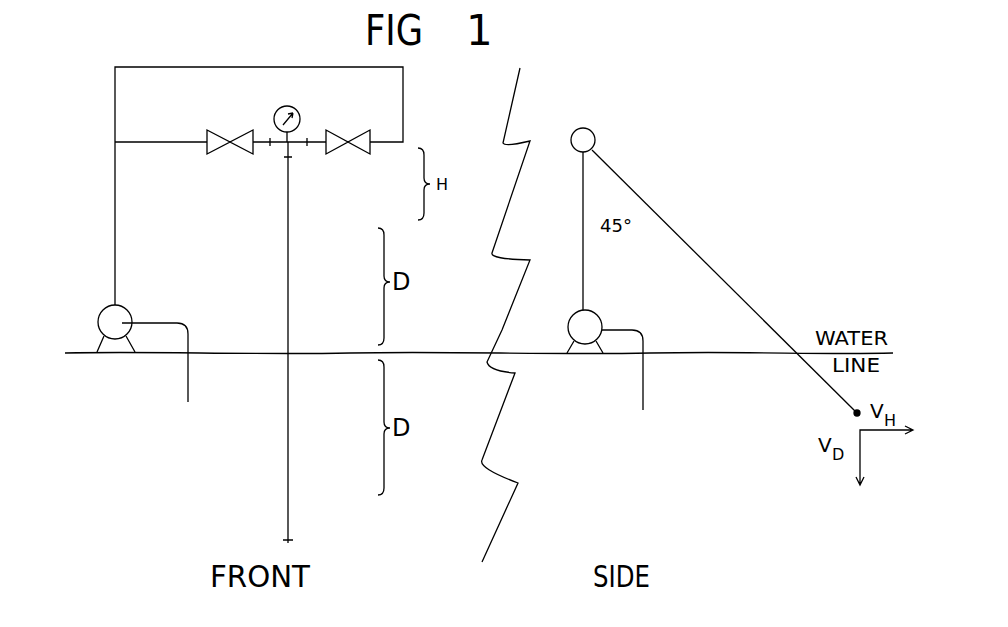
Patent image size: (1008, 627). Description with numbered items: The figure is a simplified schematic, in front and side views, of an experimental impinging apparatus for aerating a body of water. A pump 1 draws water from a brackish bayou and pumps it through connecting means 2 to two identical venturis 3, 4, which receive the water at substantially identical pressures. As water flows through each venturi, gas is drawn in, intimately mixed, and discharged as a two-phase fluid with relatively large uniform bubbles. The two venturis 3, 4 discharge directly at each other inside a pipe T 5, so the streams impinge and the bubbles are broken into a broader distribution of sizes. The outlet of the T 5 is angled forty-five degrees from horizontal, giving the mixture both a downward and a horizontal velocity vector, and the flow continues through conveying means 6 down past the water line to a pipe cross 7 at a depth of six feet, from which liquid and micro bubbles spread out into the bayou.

The pump 1 is at (103, 315).
The connecting means 2 is at (115, 142).
The venturi 3 is at (230, 148).
The venturi 4 is at (348, 148).
The pipe T 5 is at (292, 147).
The conveying means 6 is at (287, 257).
The pipe cross 7 is at (288, 500).